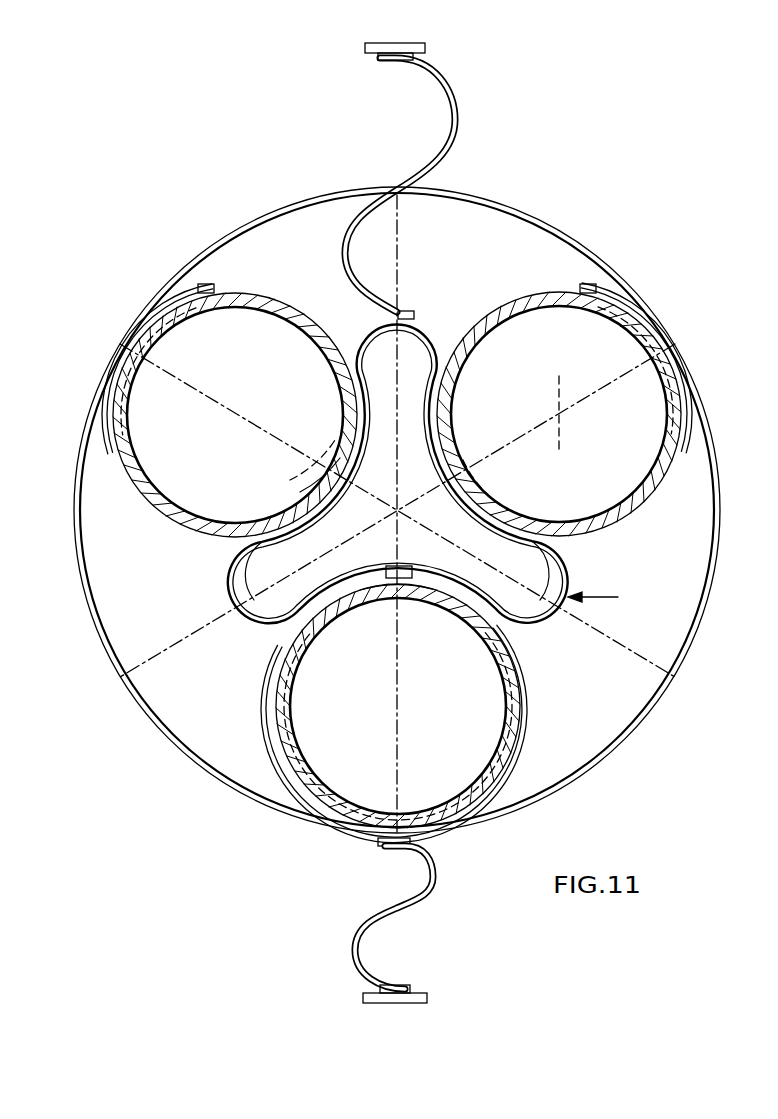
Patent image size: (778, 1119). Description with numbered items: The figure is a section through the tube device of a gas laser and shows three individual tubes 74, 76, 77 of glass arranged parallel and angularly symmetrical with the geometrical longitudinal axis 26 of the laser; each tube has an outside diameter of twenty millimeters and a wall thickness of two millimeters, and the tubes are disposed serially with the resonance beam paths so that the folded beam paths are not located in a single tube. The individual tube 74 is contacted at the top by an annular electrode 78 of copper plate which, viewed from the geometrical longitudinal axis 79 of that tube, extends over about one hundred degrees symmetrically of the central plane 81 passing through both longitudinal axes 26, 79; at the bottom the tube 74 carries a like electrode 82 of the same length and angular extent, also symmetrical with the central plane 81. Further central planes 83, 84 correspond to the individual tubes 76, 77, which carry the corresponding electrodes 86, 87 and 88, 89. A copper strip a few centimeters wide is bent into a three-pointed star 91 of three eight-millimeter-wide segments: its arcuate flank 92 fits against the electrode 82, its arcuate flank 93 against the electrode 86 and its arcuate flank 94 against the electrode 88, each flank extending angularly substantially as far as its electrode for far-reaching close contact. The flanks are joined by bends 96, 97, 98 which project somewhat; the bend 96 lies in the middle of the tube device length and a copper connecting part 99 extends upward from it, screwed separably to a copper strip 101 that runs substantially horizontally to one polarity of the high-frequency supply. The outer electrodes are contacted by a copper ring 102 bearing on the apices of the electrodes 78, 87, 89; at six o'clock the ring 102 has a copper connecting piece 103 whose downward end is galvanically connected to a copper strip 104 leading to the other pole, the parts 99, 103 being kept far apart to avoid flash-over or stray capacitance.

The geometrical longitudinal axis 26 is at (405, 512).
The individual tube 74 is at (520, 300).
The individual tube 76 is at (276, 300).
The individual tube 77 is at (521, 684).
The annular electrode 78 is at (681, 468).
The geometrical longitudinal axis 79 is at (564, 418).
The central plane 81 is at (524, 426).
The electrode 82 is at (472, 490).
The central plane 83 is at (300, 455).
The central plane 84 is at (398, 662).
The electrode 86 is at (340, 476).
The electrode 87 is at (192, 296).
The electrode 88 is at (410, 573).
The electrode 89 is at (470, 822).
The three-pointed star 91 is at (606, 599).
The arcuate flank 92 is at (432, 454).
The arcuate flank 93 is at (330, 487).
The arcuate flank 94 is at (386, 574).
The bend 96 is at (420, 322).
The bend 97 is at (246, 618).
The bend 98 is at (566, 574).
The copper connecting part 99 is at (455, 136).
The copper strip 101 is at (400, 47).
The copper ring 102 is at (80, 556).
The copper connecting piece 103 is at (430, 887).
The copper strip 104 is at (406, 1004).